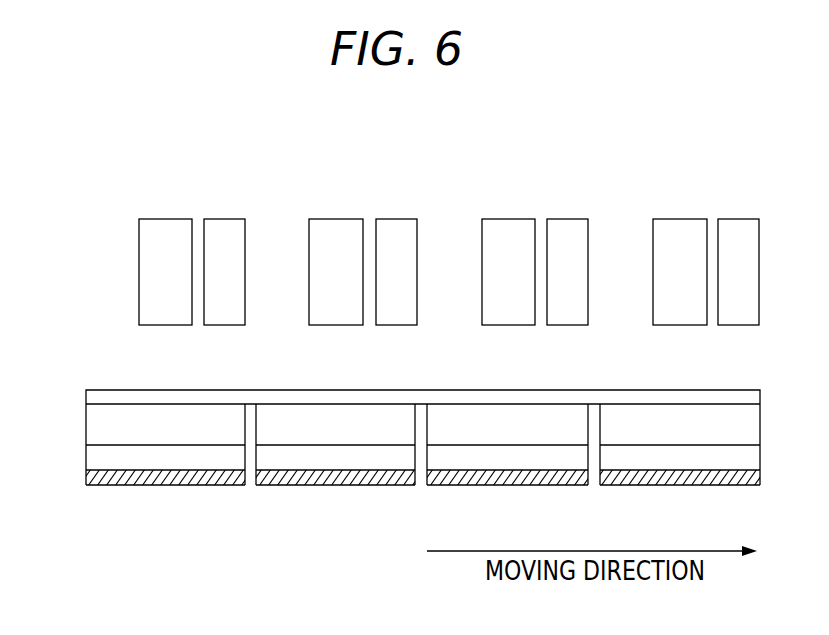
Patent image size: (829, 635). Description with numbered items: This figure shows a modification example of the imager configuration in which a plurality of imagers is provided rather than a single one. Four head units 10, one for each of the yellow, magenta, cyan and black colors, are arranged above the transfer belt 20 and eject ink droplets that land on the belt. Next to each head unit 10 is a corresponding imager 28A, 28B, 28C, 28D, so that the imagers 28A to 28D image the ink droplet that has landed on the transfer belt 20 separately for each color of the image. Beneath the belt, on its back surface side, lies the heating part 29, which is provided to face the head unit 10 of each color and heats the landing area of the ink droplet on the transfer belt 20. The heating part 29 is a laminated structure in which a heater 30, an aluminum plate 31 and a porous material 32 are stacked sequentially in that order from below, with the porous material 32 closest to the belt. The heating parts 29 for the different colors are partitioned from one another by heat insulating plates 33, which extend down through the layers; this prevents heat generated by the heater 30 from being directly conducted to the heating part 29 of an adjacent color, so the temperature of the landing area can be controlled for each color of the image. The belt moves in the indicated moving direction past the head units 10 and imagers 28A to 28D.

The head unit 10 is at (139, 245).
The imager 28A is at (228, 218).
The imager 28B is at (400, 218).
The imager 28C is at (571, 218).
The imager 28D is at (742, 218).
The transfer belt 20 is at (86, 392).
The porous material 32 is at (86, 428).
The aluminum plate 31 is at (86, 452).
The heater 30 is at (86, 480).
The heat insulating plate 33 is at (248, 485).
The heating part 29 is at (113, 512).